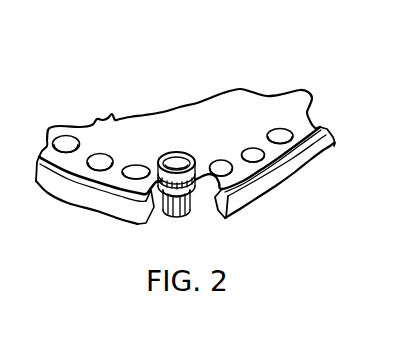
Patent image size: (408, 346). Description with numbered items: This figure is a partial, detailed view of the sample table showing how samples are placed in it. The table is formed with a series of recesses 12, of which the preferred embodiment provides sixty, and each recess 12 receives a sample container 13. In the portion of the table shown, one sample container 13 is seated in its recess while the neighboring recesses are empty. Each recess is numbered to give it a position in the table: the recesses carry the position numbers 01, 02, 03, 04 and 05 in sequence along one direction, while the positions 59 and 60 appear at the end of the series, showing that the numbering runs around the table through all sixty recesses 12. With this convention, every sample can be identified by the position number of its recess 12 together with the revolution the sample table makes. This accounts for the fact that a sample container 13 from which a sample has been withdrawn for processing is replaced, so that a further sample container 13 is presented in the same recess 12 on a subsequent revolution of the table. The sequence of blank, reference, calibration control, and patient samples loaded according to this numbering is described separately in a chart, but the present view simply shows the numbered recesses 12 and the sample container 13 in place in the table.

The recess 12 is at (273, 188).
The sample container 13 is at (187, 153).
The recess position number 01 is at (229, 168).
The recess position number 02 is at (200, 194).
The recess position number 03 is at (136, 176).
The recess position number 04 is at (102, 167).
The recess position number 05 is at (67, 151).
The recess position number 59 is at (287, 135).
The recess position number 60 is at (262, 154).